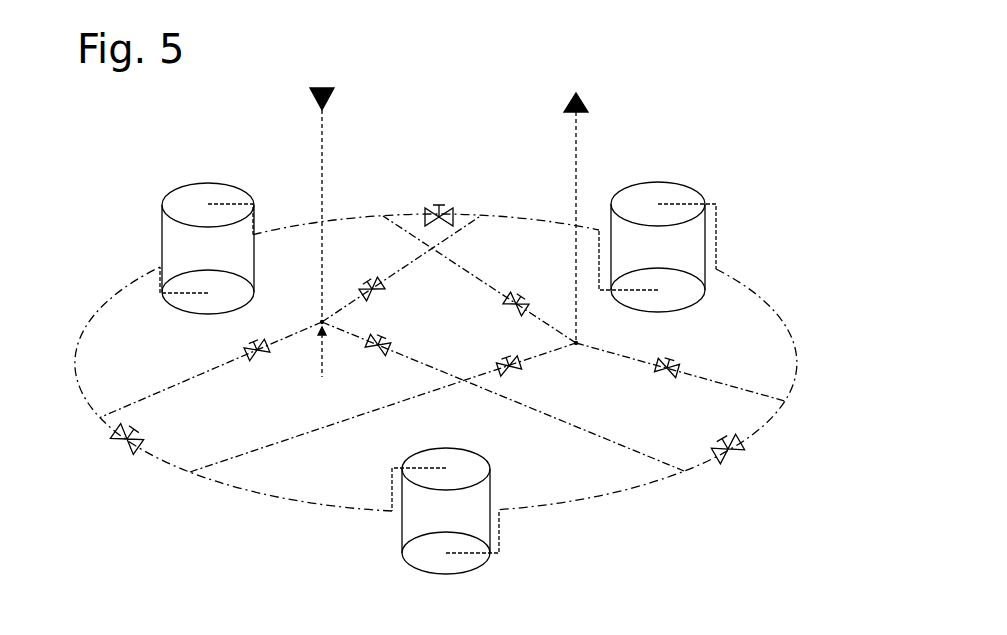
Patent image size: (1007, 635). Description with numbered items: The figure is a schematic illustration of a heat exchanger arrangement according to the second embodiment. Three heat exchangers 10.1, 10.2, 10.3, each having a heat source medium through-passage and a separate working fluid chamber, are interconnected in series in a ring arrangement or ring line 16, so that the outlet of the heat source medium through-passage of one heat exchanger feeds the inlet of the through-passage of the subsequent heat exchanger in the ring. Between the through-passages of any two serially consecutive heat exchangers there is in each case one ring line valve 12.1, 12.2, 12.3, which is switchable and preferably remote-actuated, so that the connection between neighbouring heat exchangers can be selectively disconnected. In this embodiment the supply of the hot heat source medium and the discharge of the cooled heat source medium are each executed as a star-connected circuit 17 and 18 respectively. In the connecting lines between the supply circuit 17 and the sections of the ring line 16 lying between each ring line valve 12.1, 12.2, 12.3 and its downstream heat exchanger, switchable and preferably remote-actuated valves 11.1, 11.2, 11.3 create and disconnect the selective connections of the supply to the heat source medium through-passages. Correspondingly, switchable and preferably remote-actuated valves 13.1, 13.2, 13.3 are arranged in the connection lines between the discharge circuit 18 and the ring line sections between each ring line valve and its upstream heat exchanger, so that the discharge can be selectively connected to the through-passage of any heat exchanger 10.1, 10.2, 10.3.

The heat exchanger 10.1 is at (657, 237).
The heat exchanger 10.2 is at (445, 499).
The heat exchanger 10.3 is at (207, 238).
The valve 11.1 is at (368, 276).
The valve 11.2 is at (387, 334).
The valve 11.3 is at (271, 359).
The ring line valve 12.1 is at (443, 203).
The ring line valve 12.2 is at (721, 441).
The ring line valve 12.3 is at (149, 437).
The valve 13.1 is at (524, 294).
The valve 13.2 is at (678, 357).
The valve 13.3 is at (523, 373).
The ring line 16 is at (799, 354).
The star-connected circuit 17 is at (324, 244).
The star-connected circuit 18 is at (576, 343).